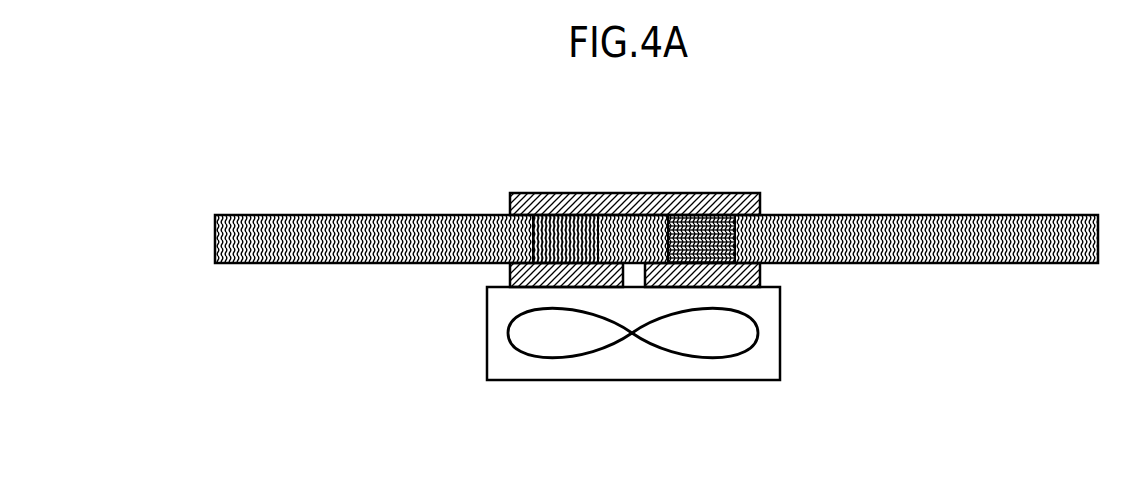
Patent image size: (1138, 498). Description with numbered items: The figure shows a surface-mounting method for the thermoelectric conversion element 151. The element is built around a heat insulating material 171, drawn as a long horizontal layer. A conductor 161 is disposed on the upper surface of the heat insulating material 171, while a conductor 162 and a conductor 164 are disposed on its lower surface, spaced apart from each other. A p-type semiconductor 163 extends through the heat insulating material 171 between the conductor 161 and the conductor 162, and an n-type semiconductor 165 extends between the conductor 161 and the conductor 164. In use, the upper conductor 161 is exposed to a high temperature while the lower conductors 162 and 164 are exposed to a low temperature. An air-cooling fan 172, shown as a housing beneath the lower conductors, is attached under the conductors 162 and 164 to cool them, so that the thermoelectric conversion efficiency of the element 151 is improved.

The thermoelectric conversion element 151 is at (638, 234).
The conductor 161 is at (510, 195).
The conductor 162 is at (533, 275).
The p-type semiconductor 163 is at (555, 240).
The conductor 164 is at (725, 270).
The n-type semiconductor 165 is at (713, 240).
The heat insulating material 171 is at (238, 218).
The air-cooling fan 172 is at (486, 367).